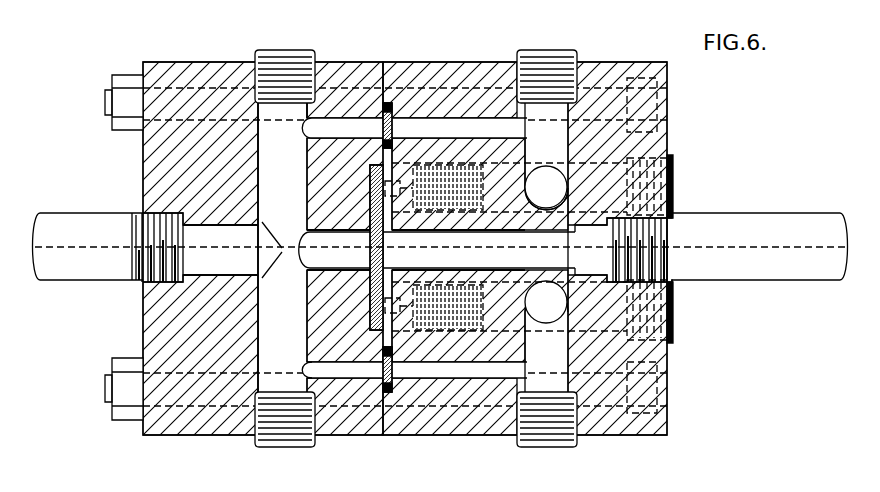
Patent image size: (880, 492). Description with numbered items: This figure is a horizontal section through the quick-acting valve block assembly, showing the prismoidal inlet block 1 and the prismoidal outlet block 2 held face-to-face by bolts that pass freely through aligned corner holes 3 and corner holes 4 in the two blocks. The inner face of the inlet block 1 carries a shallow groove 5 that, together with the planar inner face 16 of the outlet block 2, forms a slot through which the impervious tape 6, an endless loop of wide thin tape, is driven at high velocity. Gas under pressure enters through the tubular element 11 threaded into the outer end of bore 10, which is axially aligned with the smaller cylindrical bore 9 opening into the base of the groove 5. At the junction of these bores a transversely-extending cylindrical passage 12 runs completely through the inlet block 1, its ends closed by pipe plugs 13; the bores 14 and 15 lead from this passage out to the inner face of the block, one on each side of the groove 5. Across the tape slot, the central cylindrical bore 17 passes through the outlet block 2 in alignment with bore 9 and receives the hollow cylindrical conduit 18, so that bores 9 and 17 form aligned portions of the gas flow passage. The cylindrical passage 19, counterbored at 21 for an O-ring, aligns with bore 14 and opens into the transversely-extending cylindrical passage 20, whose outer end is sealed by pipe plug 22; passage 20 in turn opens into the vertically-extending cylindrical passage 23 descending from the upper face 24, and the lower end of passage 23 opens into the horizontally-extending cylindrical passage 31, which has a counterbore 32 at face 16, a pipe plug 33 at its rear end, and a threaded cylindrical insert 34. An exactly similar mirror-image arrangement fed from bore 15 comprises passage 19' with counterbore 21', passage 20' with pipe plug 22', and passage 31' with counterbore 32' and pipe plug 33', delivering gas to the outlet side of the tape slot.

The inlet block 1 is at (165, 62).
The outlet block 2 is at (600, 62).
The corner holes 3 is at (178, 92).
The corner holes 4 is at (450, 95).
The groove 5 is at (312, 173).
The impervious tape 6 is at (368, 251).
The cylindrical bore 9 is at (300, 258).
The bore 10 is at (222, 274).
The tubular element 11 is at (58, 212).
The transversely-extending cylindrical passage 12 is at (262, 200).
The pipe plugs 13 is at (268, 57).
The bore 14 is at (325, 378).
The bore 15 is at (320, 122).
The inner face 16 is at (384, 64).
The central cylindrical bore 17 is at (509, 270).
The hollow cylindrical conduit 18 is at (778, 212).
The cylindrical passage 19 is at (414, 417).
The cylindrical passage 19' is at (489, 75).
The transversely-extending cylindrical passage 20 is at (546, 341).
The transversely-extending cylindrical passage 20' is at (546, 155).
The counterbore 21 is at (370, 409).
The counterbore 21' is at (406, 88).
The pipe plug 22 is at (547, 437).
The pipe plug 22' is at (547, 58).
The vertically-extending cylindrical passage 23 is at (544, 206).
The upper face 24 is at (645, 62).
The horizontally-extending cylindrical passage 31 is at (676, 310).
The horizontally-extending cylindrical passage 31' is at (677, 180).
The counterbore 32 is at (342, 313).
The counterbore 32' is at (342, 206).
The pipe plug 33 is at (701, 312).
The pipe plug 33' is at (701, 186).
The cylindrical insert 34 is at (452, 215).